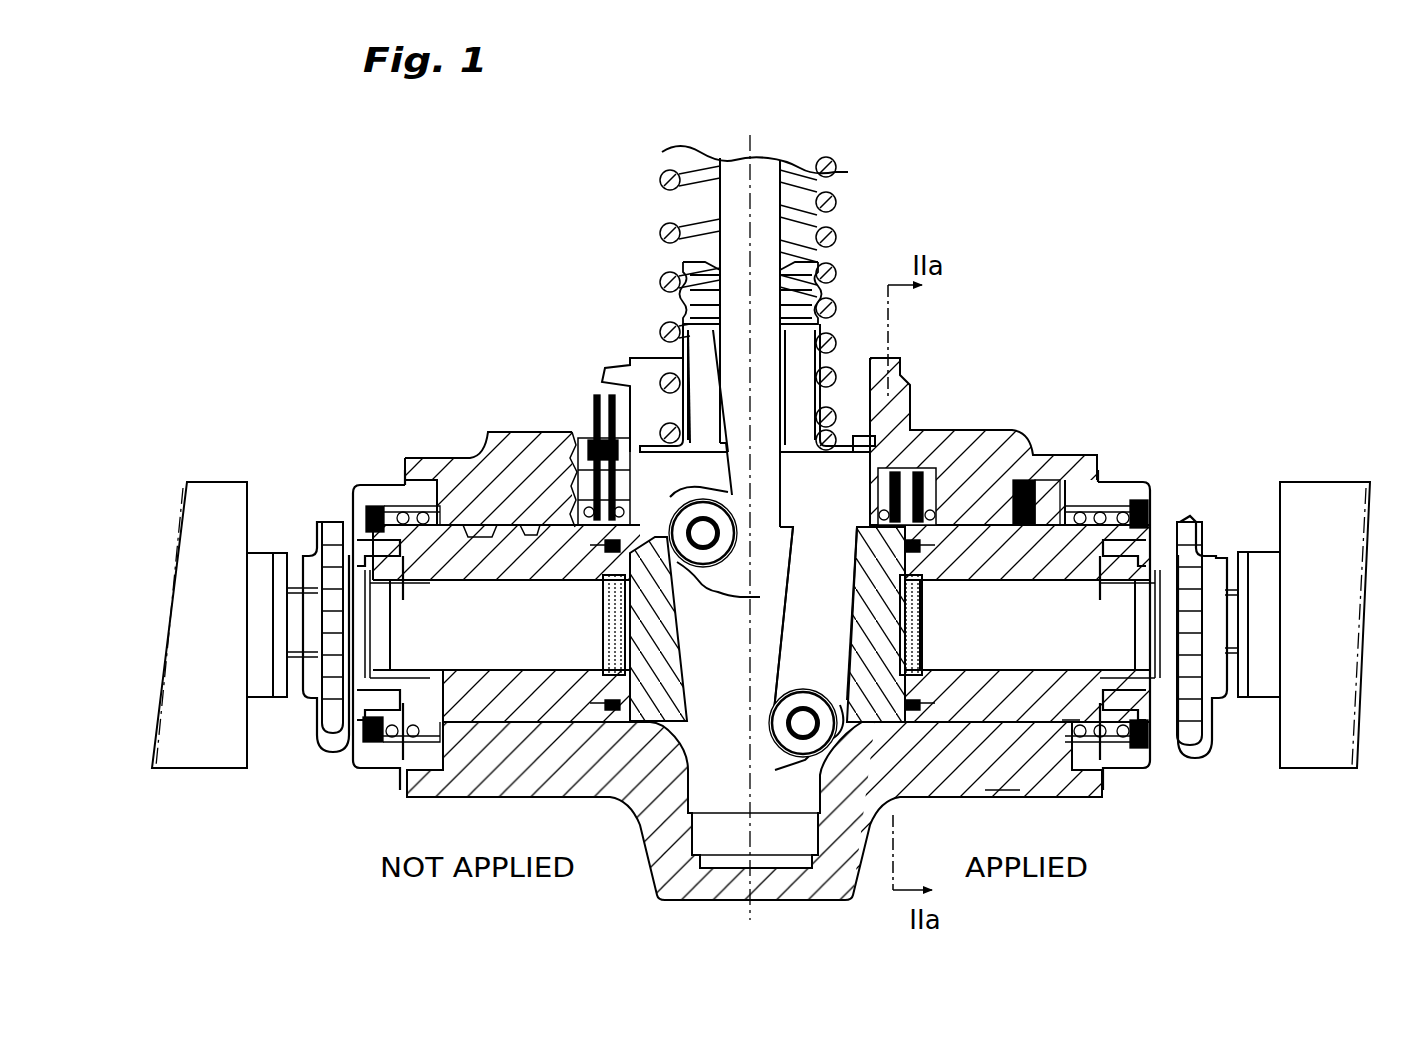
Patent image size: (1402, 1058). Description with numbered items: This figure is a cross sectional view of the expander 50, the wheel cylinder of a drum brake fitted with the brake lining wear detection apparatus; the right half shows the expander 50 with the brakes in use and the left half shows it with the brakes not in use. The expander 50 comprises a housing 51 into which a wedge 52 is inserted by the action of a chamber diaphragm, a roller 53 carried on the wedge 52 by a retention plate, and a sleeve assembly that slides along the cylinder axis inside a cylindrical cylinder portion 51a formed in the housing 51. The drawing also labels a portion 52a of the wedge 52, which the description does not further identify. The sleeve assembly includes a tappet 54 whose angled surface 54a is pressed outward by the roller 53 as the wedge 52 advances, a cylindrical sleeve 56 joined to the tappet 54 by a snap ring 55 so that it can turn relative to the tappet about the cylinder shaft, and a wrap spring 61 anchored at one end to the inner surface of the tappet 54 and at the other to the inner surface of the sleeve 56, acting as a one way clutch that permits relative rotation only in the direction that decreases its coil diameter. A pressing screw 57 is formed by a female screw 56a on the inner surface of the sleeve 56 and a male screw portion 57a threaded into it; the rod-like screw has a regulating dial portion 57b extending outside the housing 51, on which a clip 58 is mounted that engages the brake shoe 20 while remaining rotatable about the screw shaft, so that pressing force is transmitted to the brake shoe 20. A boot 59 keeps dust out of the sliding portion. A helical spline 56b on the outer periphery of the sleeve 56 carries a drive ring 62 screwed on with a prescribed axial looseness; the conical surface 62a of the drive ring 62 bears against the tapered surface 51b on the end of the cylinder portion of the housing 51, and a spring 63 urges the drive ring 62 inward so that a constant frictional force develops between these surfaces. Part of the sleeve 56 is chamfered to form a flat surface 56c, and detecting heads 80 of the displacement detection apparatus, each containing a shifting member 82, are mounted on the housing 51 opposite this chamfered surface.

The brake shoe 20 is at (210, 482).
The expander 50 is at (1108, 222).
The housing 51 is at (905, 365).
The cylindrical cylinder portion 51a is at (982, 520).
The tapered surface 51b is at (1025, 520).
The wedge 52 is at (770, 218).
The wedge surface 52a is at (790, 555).
The roller 53 is at (718, 528).
The tappet 54 is at (675, 660).
The angled surface 54a is at (850, 583).
The snap ring 55 is at (612, 725).
The sleeve 56 is at (512, 545).
The female screw 56a is at (1005, 760).
The helical spline 56b is at (1048, 795).
The flat surface 56c is at (665, 588).
The pressing screw 57 is at (762, 624).
The male screw portion 57a is at (1070, 700).
The regulating dial portion 57b is at (1185, 528).
The clip 58 is at (315, 700).
The boot 59 is at (354, 772).
The wrap spring 61 is at (612, 588).
The drive ring 62 is at (412, 500).
The conical surface 62a is at (1072, 508).
The spring 63 is at (356, 495).
The detecting head 80 is at (568, 368).
The shifting member 82 is at (640, 482).